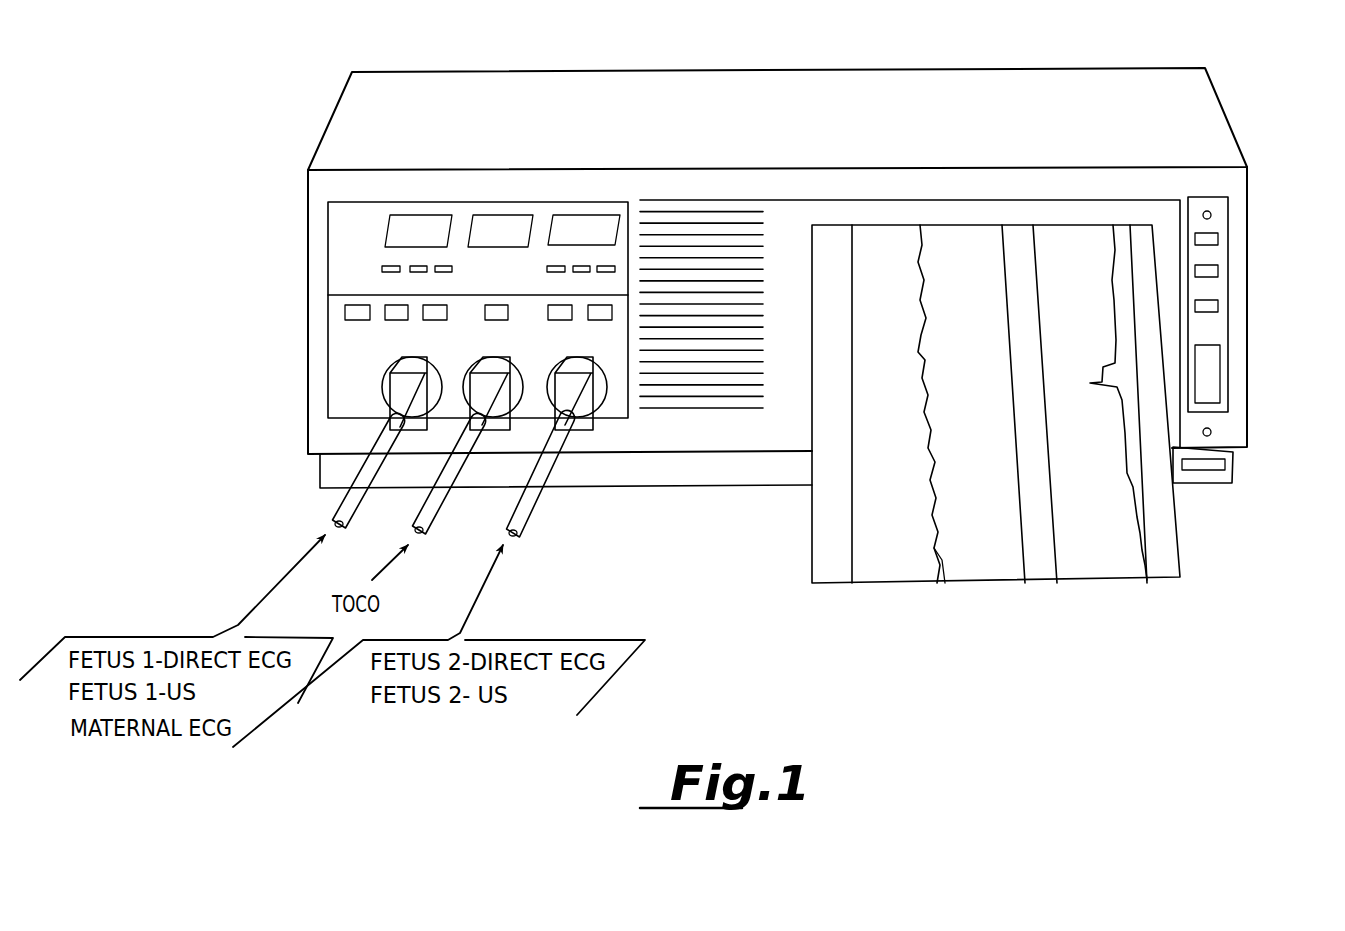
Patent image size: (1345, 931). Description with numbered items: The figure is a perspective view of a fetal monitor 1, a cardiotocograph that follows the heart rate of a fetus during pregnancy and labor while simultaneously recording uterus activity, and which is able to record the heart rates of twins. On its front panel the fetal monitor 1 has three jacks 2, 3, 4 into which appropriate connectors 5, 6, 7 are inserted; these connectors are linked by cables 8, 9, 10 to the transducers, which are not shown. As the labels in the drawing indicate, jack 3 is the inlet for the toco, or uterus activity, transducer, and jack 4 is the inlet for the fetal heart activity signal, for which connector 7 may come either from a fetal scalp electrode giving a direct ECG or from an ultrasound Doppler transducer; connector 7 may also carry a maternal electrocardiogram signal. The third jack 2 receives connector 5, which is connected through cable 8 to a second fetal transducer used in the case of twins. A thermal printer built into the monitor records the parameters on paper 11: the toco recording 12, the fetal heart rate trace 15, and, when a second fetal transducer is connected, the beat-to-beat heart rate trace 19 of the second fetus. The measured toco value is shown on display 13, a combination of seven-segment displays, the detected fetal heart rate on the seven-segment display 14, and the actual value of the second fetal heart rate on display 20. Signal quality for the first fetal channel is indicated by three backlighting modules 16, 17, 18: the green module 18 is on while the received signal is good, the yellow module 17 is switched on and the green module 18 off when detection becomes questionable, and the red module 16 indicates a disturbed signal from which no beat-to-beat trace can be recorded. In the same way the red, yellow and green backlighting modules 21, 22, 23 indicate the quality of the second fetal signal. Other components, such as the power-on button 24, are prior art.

The fetal monitor 1 is at (1266, 113).
The jack 2 is at (609, 414).
The jack 3 is at (458, 347).
The jack 4 is at (371, 391).
The connector 5 is at (578, 413).
The connector 6 is at (497, 365).
The connector 7 is at (405, 388).
The cable 8 is at (533, 517).
The cable 9 is at (445, 498).
The cable 10 is at (331, 502).
The paper 11 is at (1037, 560).
The toco recording 12 is at (1138, 545).
The display 13 is at (482, 225).
The 7-segment display 14 is at (392, 219).
The fetal heart rate trace 15 is at (925, 548).
The backlighting module 16 is at (383, 266).
The backlighting module 17 is at (418, 276).
The backlighting module 18 is at (452, 269).
The trace 19 is at (936, 560).
The display 20 is at (592, 227).
The backlighting module 21 is at (548, 267).
The backlighting module 22 is at (584, 266).
The backlighting module 23 is at (617, 266).
The power-on button 24 is at (1208, 471).